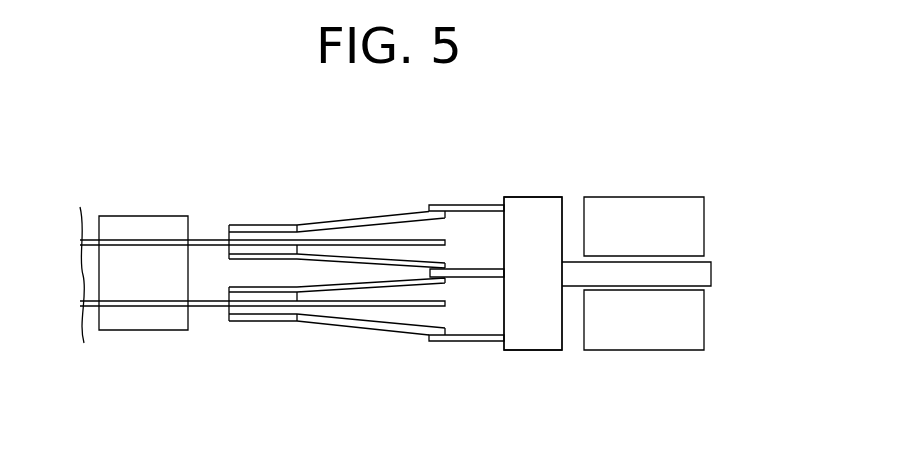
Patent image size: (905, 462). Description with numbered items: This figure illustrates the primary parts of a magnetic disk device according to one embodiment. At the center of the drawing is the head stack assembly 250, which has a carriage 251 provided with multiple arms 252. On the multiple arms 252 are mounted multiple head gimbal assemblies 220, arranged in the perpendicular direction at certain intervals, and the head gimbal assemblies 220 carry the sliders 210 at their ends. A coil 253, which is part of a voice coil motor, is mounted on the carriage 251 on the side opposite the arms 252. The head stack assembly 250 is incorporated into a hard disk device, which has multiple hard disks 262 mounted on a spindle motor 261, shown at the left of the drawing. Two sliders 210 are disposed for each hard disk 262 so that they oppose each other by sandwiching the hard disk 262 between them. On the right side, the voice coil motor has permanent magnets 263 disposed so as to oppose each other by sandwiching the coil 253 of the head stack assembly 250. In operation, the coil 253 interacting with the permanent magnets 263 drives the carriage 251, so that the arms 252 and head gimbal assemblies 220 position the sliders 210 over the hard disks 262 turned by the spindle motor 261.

The slider 210 is at (222, 229).
The head gimbal assembly 220 is at (353, 215).
The head stack assembly 250 is at (532, 196).
The carriage 251 is at (512, 197).
The arm 252 is at (443, 205).
The coil 253 is at (700, 272).
The spindle motor 261 is at (122, 226).
The hard disk 262 is at (202, 238).
The permanent magnet 263 is at (633, 197).